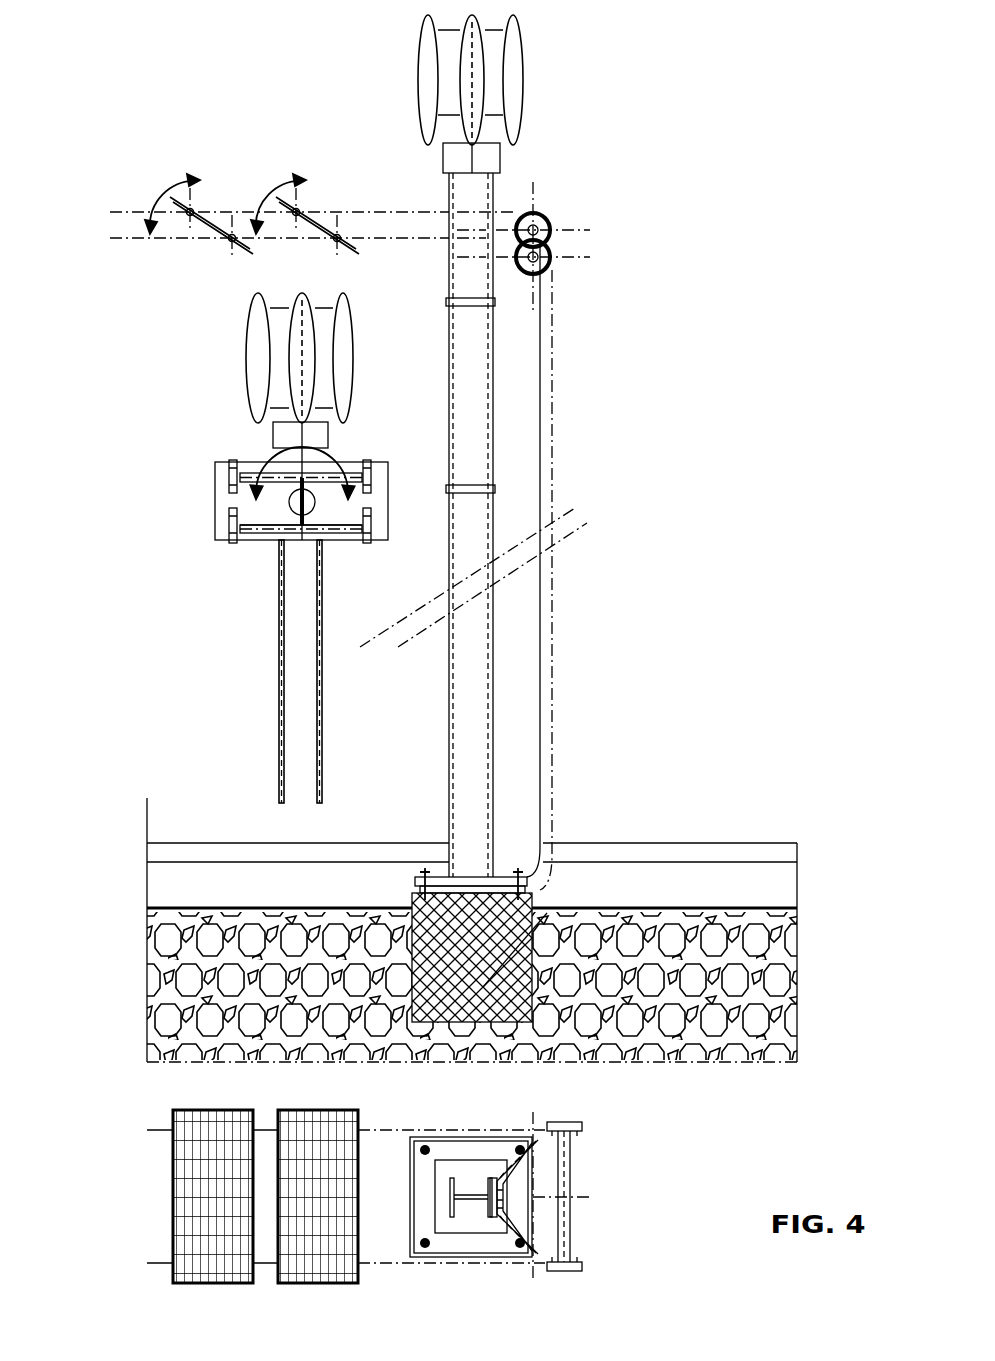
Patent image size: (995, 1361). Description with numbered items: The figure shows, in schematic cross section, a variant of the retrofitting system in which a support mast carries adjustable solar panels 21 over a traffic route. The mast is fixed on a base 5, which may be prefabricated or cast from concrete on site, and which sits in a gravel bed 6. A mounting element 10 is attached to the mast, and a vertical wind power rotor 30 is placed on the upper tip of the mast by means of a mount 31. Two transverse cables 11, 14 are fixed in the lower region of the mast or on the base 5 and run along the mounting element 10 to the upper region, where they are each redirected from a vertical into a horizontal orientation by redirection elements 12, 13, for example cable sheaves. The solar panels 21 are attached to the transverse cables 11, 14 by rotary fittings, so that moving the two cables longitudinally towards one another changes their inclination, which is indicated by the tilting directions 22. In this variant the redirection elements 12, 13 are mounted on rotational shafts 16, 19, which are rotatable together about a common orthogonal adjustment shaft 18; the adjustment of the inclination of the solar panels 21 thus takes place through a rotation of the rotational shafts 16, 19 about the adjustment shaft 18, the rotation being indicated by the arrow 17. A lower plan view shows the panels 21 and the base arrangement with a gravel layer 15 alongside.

The base 5 is at (547, 913).
The gravel bed 6 is at (740, 917).
The mounting element 10 is at (530, 403).
The transverse cable 11 is at (385, 240).
The redirection element 12 is at (548, 265).
The redirection element 13 is at (548, 222).
The transverse cable 14 is at (373, 210).
The gravel layer 15 is at (653, 927).
The rotational shaft 16 is at (255, 460).
The pivoting direction arrow 17 is at (270, 455).
The adjustment shaft 18 is at (293, 510).
The rotational shaft 19 is at (253, 520).
The solar panels 21 is at (308, 240).
The panel tilting direction 22 is at (282, 190).
The vertical wind power rotor 30 is at (518, 80).
The mount 31 is at (490, 152).